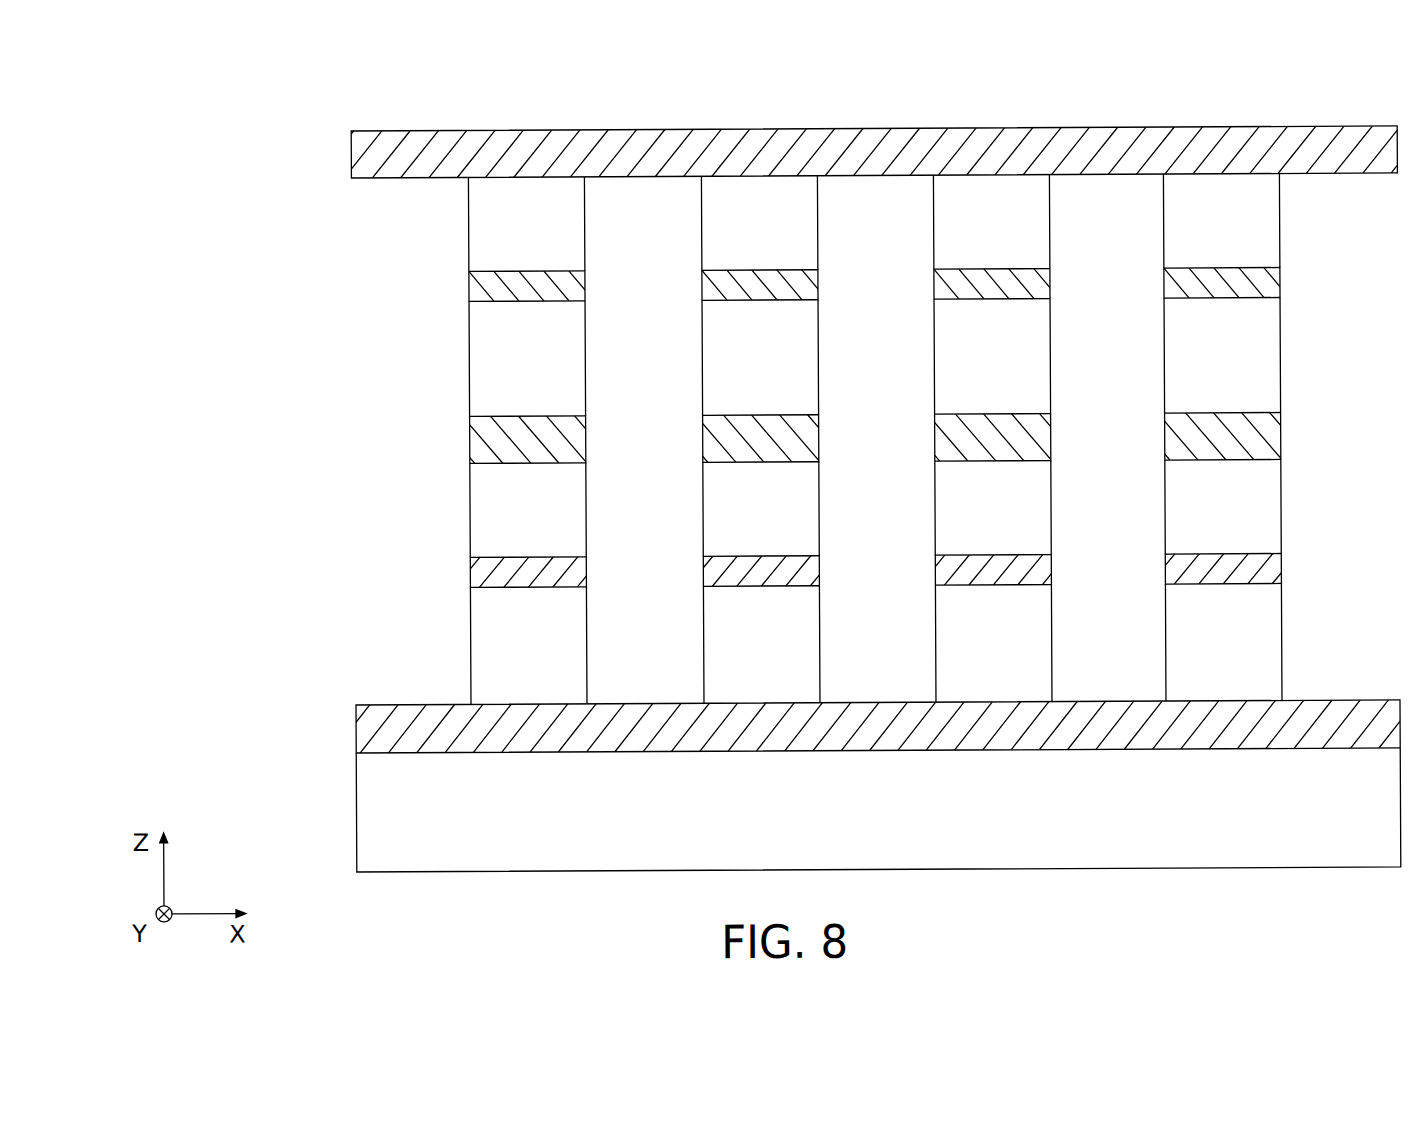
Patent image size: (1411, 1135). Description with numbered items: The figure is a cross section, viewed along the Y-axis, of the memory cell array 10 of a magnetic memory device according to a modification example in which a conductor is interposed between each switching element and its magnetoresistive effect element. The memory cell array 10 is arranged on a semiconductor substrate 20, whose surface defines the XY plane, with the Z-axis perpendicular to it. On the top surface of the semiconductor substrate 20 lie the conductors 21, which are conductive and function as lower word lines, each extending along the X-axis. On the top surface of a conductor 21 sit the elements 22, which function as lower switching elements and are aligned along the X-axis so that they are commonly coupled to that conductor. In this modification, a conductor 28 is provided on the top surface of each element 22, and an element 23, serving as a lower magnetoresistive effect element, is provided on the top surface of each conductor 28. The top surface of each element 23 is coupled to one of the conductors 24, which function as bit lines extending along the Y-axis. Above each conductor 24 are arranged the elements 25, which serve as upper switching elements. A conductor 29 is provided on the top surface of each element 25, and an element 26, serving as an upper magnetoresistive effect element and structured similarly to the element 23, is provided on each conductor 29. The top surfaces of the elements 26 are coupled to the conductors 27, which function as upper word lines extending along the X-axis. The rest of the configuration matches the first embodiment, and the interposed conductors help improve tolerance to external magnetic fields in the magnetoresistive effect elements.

The memory cell array 10 is at (249, 102).
The semiconductor substrate 20 is at (357, 812).
The conductor 21 is at (357, 743).
The element 22 is at (471, 650).
The element 23 is at (471, 515).
The conductor 24 is at (471, 445).
The element 25 is at (471, 363).
The element 26 is at (471, 228).
The conductor 27 is at (353, 158).
The conductor 28 is at (471, 573).
The conductor 29 is at (471, 292).